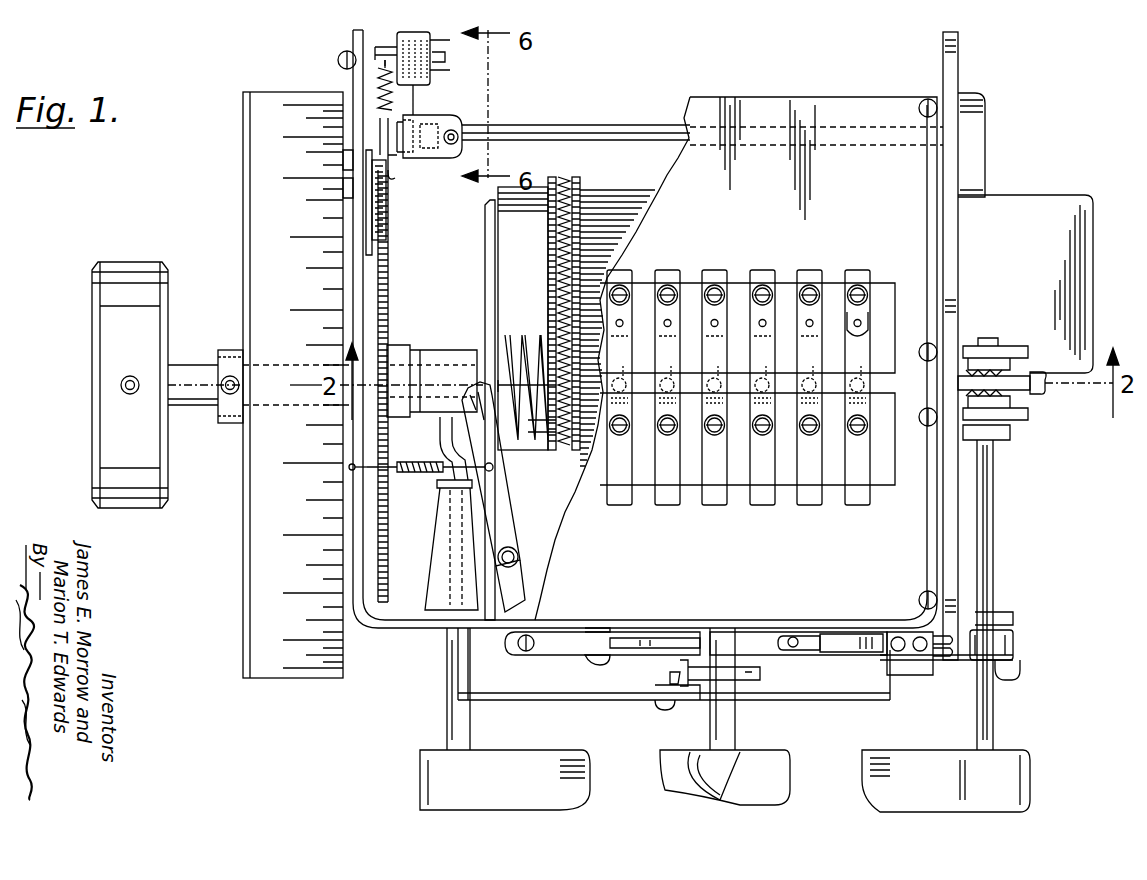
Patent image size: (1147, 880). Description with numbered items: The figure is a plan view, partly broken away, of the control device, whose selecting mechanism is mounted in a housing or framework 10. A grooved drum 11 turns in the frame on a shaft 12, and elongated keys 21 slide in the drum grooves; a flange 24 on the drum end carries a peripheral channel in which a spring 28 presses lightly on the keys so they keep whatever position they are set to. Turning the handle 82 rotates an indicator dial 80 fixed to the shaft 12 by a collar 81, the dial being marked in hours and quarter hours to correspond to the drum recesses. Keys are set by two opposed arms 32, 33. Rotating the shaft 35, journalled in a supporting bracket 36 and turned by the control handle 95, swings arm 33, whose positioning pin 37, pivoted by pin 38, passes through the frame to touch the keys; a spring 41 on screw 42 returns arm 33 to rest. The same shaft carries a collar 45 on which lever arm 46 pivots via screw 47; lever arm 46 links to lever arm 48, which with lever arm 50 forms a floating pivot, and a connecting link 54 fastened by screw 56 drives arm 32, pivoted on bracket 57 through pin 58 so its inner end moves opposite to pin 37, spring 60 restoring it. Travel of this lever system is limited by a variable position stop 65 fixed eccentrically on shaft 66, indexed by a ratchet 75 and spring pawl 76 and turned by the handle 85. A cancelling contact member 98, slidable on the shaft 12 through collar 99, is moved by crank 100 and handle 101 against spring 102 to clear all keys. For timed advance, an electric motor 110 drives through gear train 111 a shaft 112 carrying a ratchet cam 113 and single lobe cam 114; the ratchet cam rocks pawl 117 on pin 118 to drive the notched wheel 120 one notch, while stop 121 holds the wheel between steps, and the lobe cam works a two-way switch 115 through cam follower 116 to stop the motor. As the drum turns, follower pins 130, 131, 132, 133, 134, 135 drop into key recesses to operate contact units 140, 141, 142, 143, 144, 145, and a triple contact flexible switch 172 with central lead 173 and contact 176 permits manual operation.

The housing 10 is at (380, 628).
The drum 11 is at (603, 187).
The shaft 12 is at (185, 365).
The keys 21 is at (540, 205).
The flange 24 is at (552, 177).
The spring 28 is at (566, 177).
The arm 32 is at (498, 490).
The arm 33 is at (1010, 430).
The shaft 35 is at (993, 478).
The supporting bracket 36 is at (1013, 614).
The positioning pin 37 is at (1038, 390).
The pin 38 is at (1028, 412).
The spring 41 is at (966, 346).
The screw 42 is at (1038, 372).
The collar 45 is at (1013, 632).
The lever arm 46 is at (965, 660).
The screw 47 is at (1020, 672).
The lever arm 48 is at (636, 650).
The lever arm 50 is at (670, 632).
The connecting link 54 is at (570, 648).
The screw 56 is at (595, 662).
The bracket 57 is at (535, 568).
The pin 58 is at (518, 555).
The spring 60 is at (422, 472).
The variable position stop 65 is at (775, 650).
The shaft 66 is at (735, 716).
The ratchet 75 is at (760, 674).
The spring pawl 76 is at (672, 684).
The indicator dial 80 is at (243, 92).
The collar 81 is at (222, 350).
The handle 82 is at (92, 268).
The handle 85 is at (665, 750).
The control handle 95 is at (862, 750).
The contact member 98 is at (485, 264).
The collar 99 is at (438, 350).
The crank 100 is at (433, 440).
The handle 101 is at (565, 750).
The spring 102 is at (512, 335).
The electric motor 110 is at (1043, 195).
The gear train 111 is at (985, 160).
The shaft 112 is at (624, 126).
The ratchet cam 113 is at (393, 162).
The single lobe cam 114 is at (416, 116).
The two-way switch 115 is at (437, 75).
The cam follower 116 is at (425, 97).
The pawl 117 is at (386, 212).
The pin 118 is at (343, 176).
The notched wheel 120 is at (388, 300).
The stop 121 is at (392, 256).
The follower pin 130 is at (621, 360).
The follower pin 131 is at (669, 360).
The follower pin 132 is at (716, 360).
The follower pin 133 is at (764, 360).
The follower pin 134 is at (811, 360).
The follower pin 135 is at (859, 360).
The contact unit 140 is at (632, 259).
The contact unit 141 is at (682, 259).
The contact unit 142 is at (729, 259).
The contact unit 143 is at (777, 259).
The contact unit 144 is at (827, 259).
The contact unit 145 is at (877, 259).
The triple contact flexible switch 172 is at (908, 632).
The central lead 173 is at (802, 632).
The contact 176 is at (845, 634).